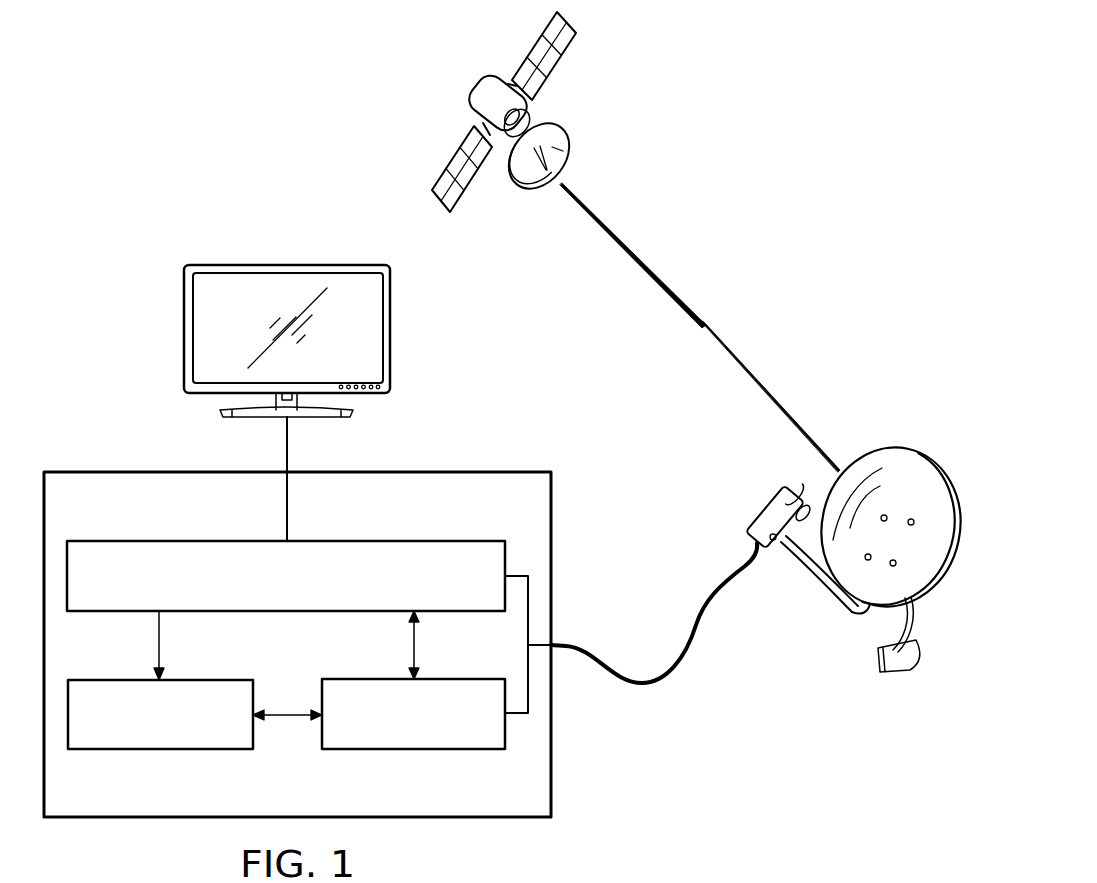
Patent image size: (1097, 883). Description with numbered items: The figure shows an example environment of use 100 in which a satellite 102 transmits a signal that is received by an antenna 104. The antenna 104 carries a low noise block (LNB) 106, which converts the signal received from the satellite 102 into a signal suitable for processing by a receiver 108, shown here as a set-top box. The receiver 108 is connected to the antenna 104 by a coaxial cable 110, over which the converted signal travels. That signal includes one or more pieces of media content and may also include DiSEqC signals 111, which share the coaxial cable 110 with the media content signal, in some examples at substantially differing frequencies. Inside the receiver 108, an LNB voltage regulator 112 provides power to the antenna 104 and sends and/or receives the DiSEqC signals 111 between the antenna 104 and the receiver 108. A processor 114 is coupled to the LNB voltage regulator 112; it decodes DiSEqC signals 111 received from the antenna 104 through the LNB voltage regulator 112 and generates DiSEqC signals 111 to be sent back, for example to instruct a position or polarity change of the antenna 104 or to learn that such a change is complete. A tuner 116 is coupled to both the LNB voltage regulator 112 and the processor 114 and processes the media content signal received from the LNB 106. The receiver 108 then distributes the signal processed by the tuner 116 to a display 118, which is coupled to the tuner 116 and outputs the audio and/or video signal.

The environment of use 100 is at (198, 165).
The satellite 102 is at (482, 82).
The antenna 104 is at (917, 425).
The low noise block (LNB) 106 is at (770, 497).
The receiver 108 is at (132, 465).
The coaxial cable 110 is at (697, 607).
The DiSEqC signals 111 is at (657, 700).
The LNB voltage regulator 112 is at (426, 752).
The processor 114 is at (148, 752).
The tuner 116 is at (320, 540).
The display 118 is at (184, 330).